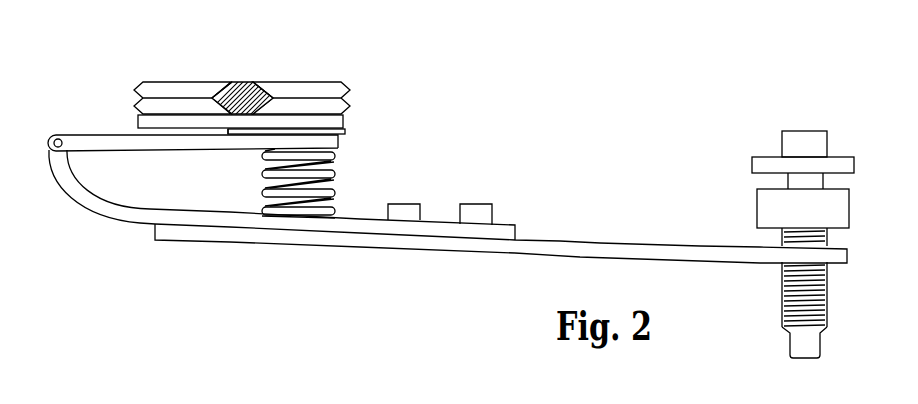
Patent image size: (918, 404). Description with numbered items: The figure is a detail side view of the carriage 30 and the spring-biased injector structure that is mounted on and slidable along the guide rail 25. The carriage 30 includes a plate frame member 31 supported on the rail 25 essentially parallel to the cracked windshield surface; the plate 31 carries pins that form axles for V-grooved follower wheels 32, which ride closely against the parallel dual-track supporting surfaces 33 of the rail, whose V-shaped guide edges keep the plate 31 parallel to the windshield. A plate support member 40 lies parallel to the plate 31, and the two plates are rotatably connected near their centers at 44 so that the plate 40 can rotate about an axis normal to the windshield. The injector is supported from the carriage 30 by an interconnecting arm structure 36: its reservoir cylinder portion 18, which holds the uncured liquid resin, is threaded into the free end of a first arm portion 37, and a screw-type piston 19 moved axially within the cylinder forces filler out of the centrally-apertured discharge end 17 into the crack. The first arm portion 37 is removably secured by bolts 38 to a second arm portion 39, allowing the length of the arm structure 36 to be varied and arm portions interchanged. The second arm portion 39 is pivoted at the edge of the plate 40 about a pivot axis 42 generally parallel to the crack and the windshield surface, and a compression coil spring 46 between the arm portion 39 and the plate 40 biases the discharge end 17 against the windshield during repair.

The discharge end 17 is at (812, 357).
The reservoir cylinder portion 18 is at (827, 277).
The screw-type piston 19 is at (815, 143).
The guide rail 25 is at (243, 86).
The carriage 30 is at (352, 132).
The plate frame member 31 is at (345, 121).
The follower wheels 32 is at (133, 97).
The dual-track supporting surfaces 33 is at (221, 87).
The arm structure 36 is at (497, 255).
The first arm portion 37 is at (228, 235).
The bolts 38 is at (482, 213).
The second arm portion 39 is at (113, 217).
The plate support member 40 is at (338, 147).
The pivot axis 42 is at (50, 147).
The rotatable connection 44 is at (237, 130).
The compression coil spring 46 is at (333, 175).